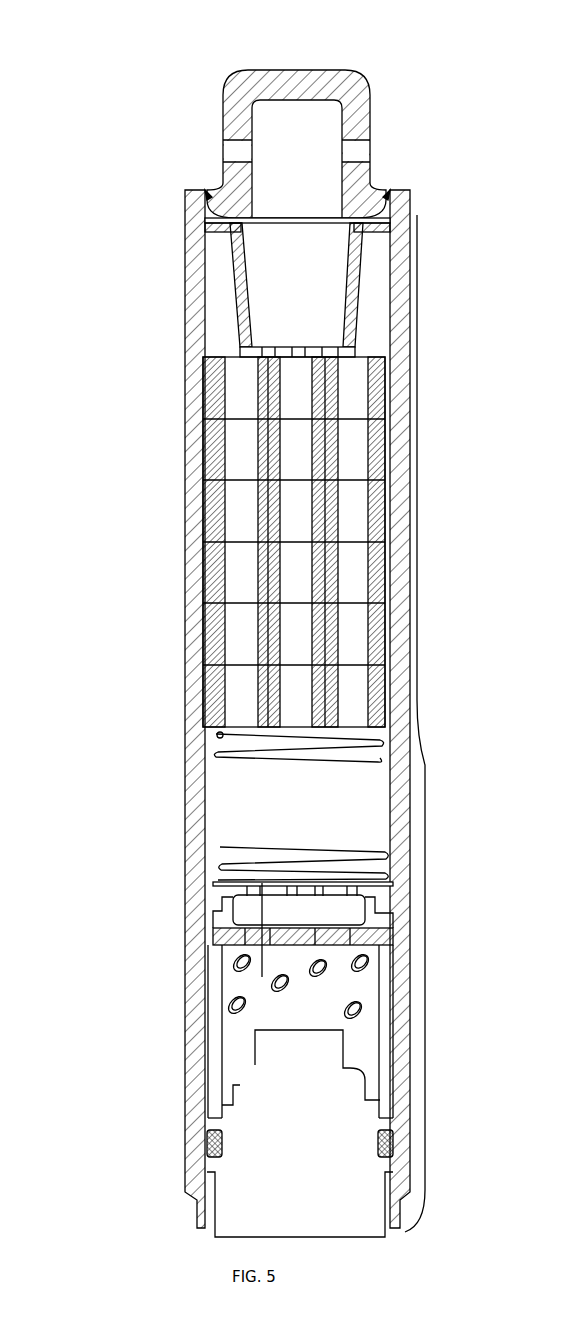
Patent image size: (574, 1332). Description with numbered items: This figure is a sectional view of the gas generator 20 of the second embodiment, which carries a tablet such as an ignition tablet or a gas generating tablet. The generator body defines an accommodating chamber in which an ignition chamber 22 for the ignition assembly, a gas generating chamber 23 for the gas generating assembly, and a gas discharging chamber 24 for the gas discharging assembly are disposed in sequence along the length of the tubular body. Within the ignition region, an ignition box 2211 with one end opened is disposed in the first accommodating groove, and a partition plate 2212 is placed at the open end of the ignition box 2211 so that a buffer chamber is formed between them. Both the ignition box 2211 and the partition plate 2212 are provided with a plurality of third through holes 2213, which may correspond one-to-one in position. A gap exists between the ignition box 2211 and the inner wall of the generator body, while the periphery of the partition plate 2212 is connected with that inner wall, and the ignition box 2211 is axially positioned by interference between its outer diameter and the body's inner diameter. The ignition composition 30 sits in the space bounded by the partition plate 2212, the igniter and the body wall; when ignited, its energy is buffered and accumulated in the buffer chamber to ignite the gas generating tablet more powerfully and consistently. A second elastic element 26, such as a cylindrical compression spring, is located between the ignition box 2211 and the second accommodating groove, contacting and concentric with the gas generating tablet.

The gas generator 20 is at (286, 30).
The ignition chamber 22 is at (425, 982).
The gas generating chamber 23 is at (418, 478).
The gas discharging chamber 24 is at (400, 62).
The second elastic element 26 is at (220, 734).
The ignition box 2211 is at (225, 898).
The partition plate 2212 is at (225, 935).
The third through holes 2213 is at (335, 935).
The ignition composition 30 is at (347, 1013).